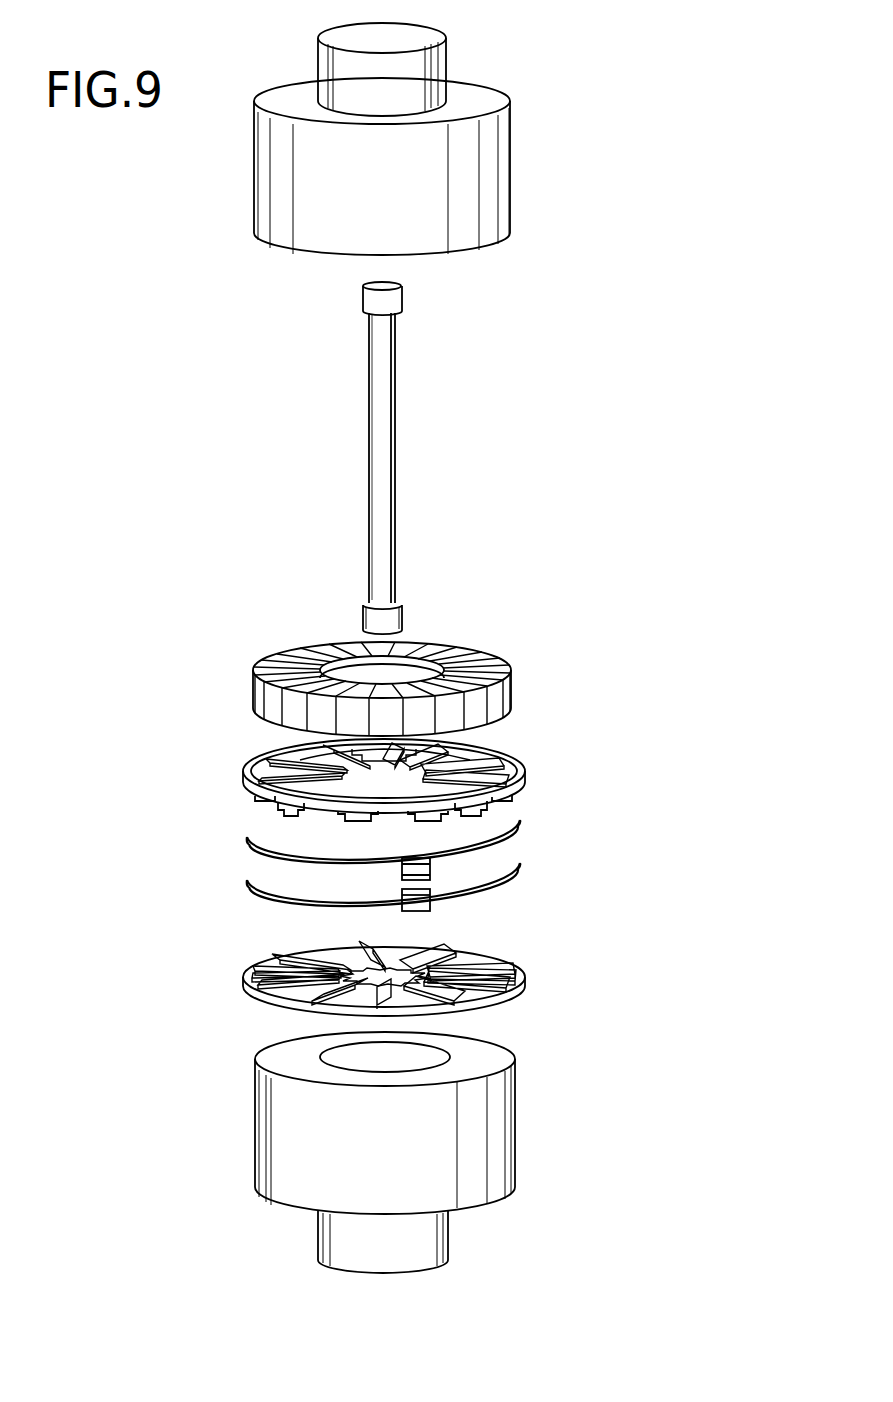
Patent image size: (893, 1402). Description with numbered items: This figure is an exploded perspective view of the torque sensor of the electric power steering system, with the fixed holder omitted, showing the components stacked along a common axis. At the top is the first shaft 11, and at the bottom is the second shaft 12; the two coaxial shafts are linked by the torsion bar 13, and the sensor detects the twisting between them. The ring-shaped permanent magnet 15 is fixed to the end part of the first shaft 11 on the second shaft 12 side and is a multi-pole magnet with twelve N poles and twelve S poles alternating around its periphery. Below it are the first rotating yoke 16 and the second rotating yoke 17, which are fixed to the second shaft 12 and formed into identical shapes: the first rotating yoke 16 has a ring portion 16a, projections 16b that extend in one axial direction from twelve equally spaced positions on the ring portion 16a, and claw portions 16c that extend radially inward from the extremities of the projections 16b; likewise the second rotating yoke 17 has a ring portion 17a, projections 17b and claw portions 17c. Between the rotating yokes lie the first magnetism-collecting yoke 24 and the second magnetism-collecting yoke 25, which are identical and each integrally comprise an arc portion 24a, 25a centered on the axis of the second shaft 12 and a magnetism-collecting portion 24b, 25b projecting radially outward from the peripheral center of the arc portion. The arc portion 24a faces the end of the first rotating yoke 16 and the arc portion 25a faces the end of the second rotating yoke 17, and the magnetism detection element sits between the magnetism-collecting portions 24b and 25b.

The first shaft 11 is at (470, 200).
The second shaft 12 is at (515, 1172).
The torsion bar 13 is at (386, 424).
The permanent magnet 15 is at (445, 652).
The first rotating yoke 16 is at (390, 763).
The ring portion 16a is at (493, 758).
The projections 16b is at (258, 800).
The claw portions 16c is at (333, 760).
The second rotating yoke 17 is at (396, 1023).
The ring portion 17a is at (320, 1002).
The projections 17b is at (392, 1008).
The claw portions 17c is at (392, 952).
The first magnetism-collecting yoke 24 is at (384, 863).
The arc portion 24a is at (248, 836).
The magnetism-collecting portion 24b is at (428, 862).
The second magnetism-collecting yoke 25 is at (384, 893).
The arc portion 25a is at (248, 880).
The magnetism-collecting portion 25b is at (420, 903).